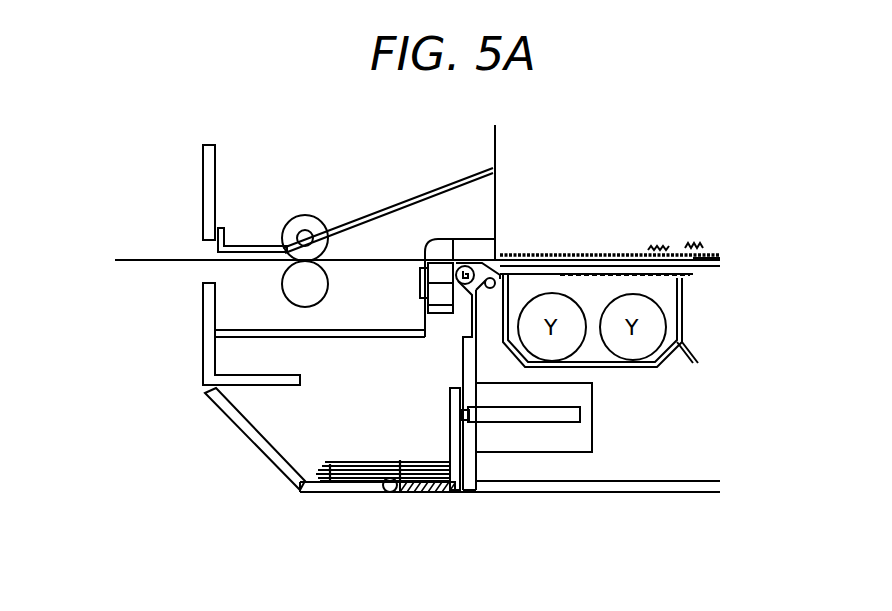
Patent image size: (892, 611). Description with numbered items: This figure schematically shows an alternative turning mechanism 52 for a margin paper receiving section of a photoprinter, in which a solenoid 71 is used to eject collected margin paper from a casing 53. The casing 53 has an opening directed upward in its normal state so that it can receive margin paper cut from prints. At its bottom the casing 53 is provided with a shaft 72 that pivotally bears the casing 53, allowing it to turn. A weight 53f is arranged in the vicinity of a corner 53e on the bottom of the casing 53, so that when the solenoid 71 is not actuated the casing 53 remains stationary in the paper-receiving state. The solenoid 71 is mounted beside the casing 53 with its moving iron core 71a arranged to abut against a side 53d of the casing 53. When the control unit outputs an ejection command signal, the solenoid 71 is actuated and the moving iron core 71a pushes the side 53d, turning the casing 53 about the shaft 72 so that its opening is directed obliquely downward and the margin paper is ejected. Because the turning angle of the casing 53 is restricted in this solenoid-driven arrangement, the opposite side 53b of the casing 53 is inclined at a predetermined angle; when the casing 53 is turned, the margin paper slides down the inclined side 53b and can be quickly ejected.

The turning mechanism 52 is at (537, 498).
The casing 53 is at (310, 492).
The side 53b is at (245, 419).
The side 53d is at (452, 395).
The corner 53e is at (460, 497).
The weight 53f is at (440, 492).
The shaft 72 is at (392, 492).
The solenoid 71 is at (581, 443).
The moving iron core 71a is at (512, 415).